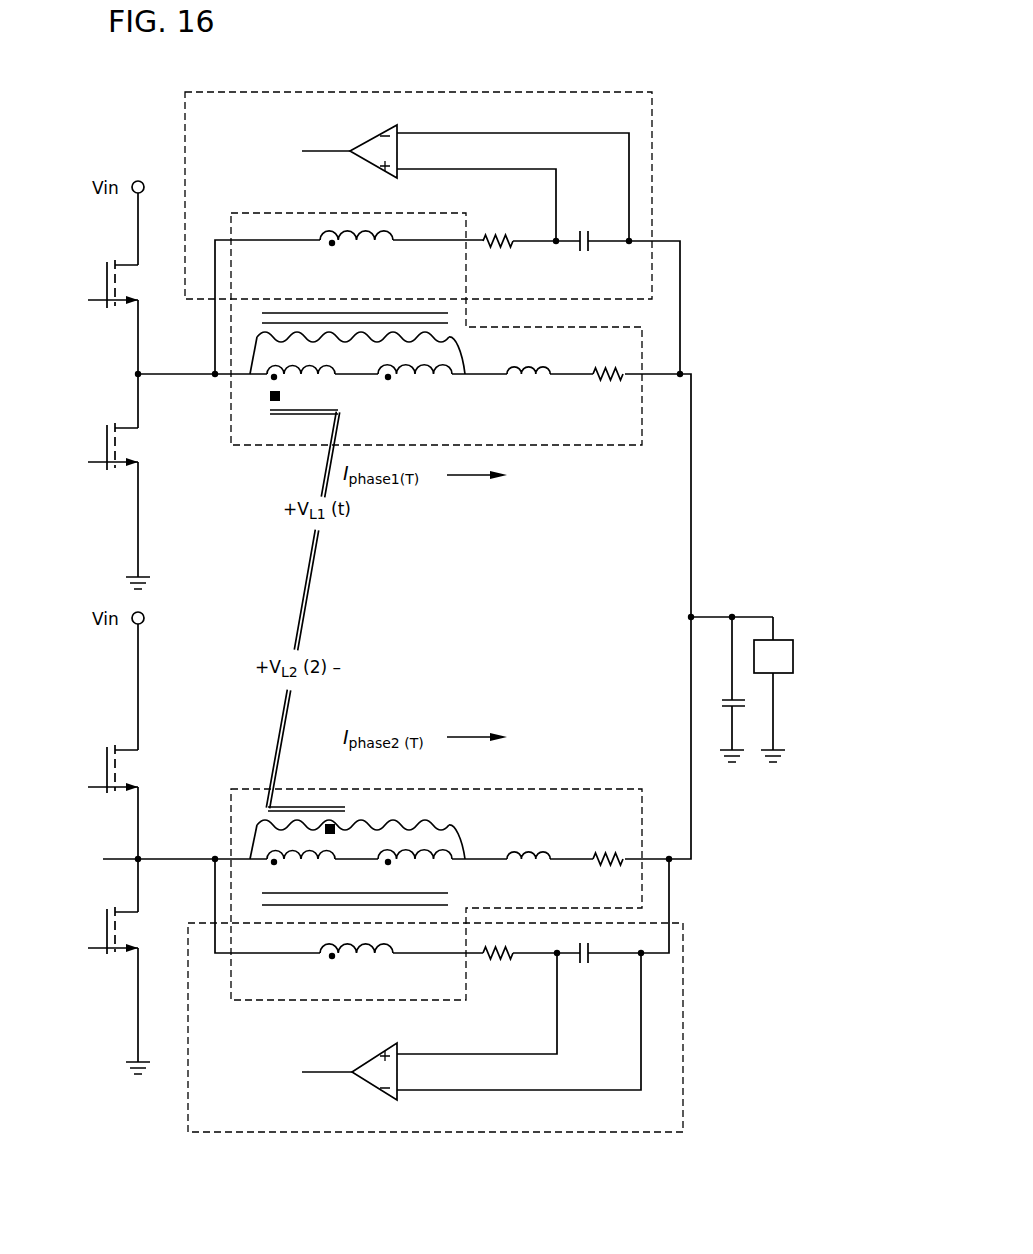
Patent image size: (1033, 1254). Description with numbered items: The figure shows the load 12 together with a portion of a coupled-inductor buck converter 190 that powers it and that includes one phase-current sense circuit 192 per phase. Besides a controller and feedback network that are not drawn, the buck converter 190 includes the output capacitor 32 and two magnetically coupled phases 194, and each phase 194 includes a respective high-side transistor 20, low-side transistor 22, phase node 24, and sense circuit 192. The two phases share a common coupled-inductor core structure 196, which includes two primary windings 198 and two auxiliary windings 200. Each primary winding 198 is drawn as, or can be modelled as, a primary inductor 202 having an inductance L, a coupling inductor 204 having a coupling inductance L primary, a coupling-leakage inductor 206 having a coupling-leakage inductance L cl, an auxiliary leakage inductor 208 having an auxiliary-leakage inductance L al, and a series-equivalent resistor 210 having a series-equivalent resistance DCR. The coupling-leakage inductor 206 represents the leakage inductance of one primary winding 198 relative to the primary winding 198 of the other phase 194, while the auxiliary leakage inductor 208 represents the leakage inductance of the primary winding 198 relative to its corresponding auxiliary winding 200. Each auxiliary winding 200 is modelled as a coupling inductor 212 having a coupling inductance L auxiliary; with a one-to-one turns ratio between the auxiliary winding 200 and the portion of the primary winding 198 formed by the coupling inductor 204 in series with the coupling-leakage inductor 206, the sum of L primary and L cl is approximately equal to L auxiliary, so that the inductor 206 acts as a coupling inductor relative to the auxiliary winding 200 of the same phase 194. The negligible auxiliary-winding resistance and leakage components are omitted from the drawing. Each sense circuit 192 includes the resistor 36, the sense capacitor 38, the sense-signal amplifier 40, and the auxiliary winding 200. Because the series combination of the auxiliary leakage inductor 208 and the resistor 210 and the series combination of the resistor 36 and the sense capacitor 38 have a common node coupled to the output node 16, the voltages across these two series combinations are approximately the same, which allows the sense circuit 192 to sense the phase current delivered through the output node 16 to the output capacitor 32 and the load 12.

The coupled-inductor buck converter 190 is at (585, 55).
The phase-current sense circuit 192 is at (652, 135).
The magnetically coupled phase 194 is at (668, 222).
The coupled-inductor core structure 196 is at (625, 447).
The primary winding 198 is at (465, 392).
The auxiliary winding 200 is at (405, 225).
The primary inductor 202 is at (257, 337).
The coupling inductor 204 is at (267, 360).
The coupling-leakage inductor 206 is at (440, 368).
The auxiliary leakage inductor 208 is at (522, 378).
The series-equivalent resistor 210 is at (601, 379).
The coupling inductor 212 is at (394, 243).
The high-side transistor 20 is at (107, 280).
The low-side transistor 22 is at (107, 445).
The phase node 24 is at (138, 378).
The resistor 36 is at (500, 246).
The sense capacitor 38 is at (585, 251).
The sense-signal amplifier 40 is at (375, 136).
The output node 16 is at (708, 615).
The load 12 is at (793, 655).
The output capacitor 32 is at (745, 703).